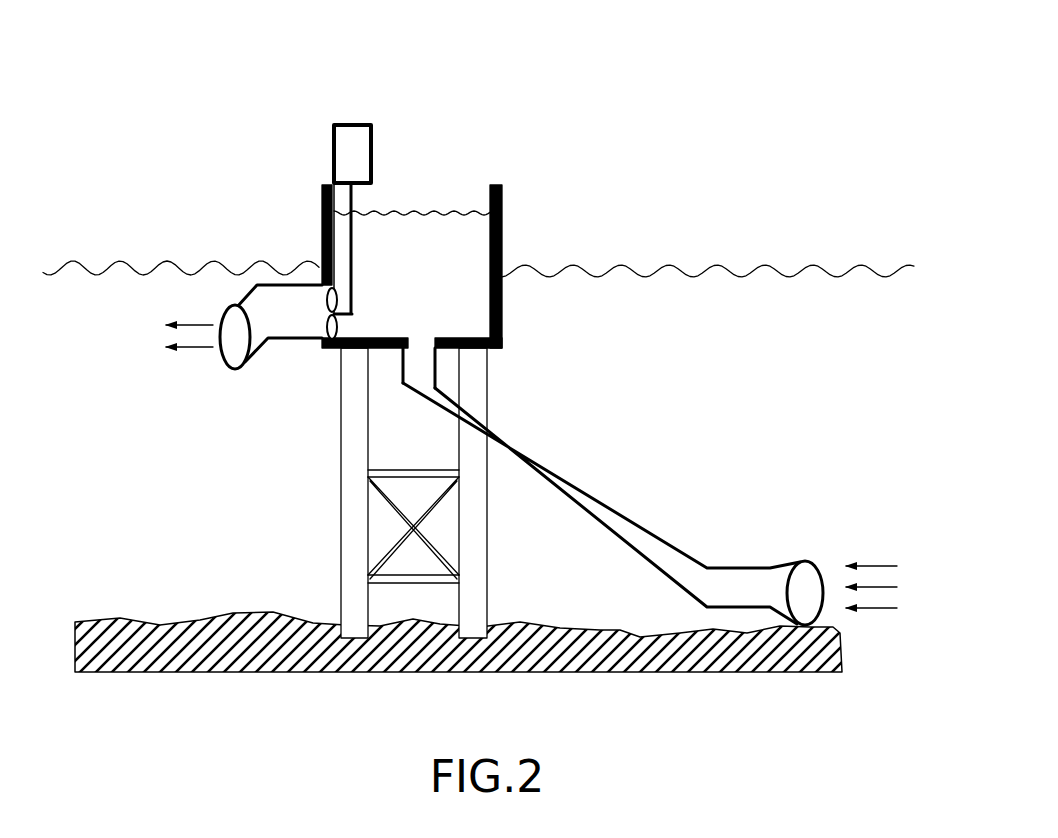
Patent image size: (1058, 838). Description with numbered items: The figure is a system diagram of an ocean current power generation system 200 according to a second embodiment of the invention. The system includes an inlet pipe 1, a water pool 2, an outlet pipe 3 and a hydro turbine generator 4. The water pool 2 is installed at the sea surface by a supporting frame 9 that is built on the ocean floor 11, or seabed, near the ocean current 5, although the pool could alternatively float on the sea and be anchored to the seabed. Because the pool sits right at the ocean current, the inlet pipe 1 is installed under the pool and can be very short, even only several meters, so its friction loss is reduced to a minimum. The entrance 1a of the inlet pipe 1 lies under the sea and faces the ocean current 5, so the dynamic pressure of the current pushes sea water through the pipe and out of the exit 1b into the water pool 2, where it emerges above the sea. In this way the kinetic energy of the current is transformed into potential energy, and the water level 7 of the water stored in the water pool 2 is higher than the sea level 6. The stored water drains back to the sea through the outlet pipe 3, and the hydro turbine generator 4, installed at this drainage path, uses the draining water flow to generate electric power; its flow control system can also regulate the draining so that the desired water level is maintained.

The ocean current power generation system 200 is at (501, 336).
The inlet pipe 1 is at (648, 522).
The entrance 1a is at (813, 558).
The exit 1b is at (422, 338).
The water pool 2 is at (497, 180).
The outlet pipe 3 is at (228, 300).
The hydro turbine generator 4 is at (352, 120).
The ocean current 5 is at (893, 557).
The sea level 6 is at (775, 263).
The water level 7 is at (417, 208).
The supporting frame 9 is at (340, 510).
The ocean floor 11 is at (237, 612).